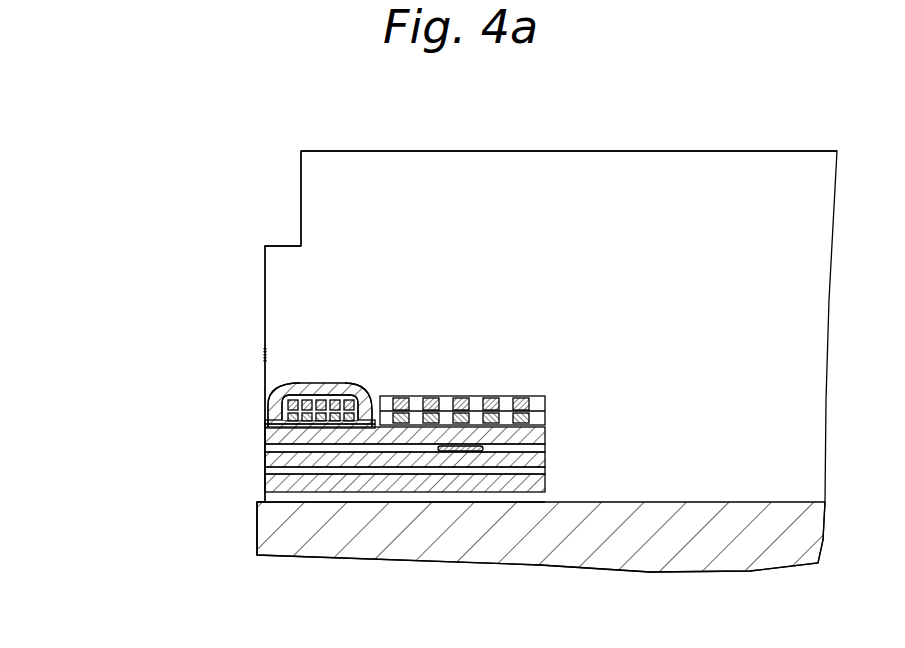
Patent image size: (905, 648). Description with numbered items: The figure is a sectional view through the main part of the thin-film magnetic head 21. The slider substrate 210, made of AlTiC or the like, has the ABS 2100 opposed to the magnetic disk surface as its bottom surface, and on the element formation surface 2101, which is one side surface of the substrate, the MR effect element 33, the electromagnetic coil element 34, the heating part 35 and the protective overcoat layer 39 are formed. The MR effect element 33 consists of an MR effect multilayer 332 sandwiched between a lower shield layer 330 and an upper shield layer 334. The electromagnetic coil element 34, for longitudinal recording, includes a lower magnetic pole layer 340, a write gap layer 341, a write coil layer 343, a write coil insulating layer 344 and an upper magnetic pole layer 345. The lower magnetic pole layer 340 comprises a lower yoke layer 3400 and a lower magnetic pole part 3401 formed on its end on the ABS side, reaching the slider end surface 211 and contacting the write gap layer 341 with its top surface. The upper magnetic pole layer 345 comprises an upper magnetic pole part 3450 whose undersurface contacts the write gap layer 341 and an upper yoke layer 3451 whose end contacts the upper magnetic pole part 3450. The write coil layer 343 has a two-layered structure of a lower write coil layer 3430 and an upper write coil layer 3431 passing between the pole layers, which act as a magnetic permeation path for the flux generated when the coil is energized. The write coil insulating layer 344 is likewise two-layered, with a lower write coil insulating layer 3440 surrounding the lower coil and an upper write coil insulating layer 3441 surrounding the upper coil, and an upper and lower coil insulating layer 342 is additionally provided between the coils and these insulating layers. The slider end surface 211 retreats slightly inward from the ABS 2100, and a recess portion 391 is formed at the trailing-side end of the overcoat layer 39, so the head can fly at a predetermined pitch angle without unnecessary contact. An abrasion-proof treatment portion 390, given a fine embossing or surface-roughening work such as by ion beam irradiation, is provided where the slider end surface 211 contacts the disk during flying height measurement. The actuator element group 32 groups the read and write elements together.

The thin-film magnetic head 21 is at (640, 142).
The overcoat layer 39 is at (365, 175).
The recess portion 391 is at (300, 196).
The slider end surface 211 is at (264, 258).
The slider substrate 210 is at (574, 565).
The ABS 2100 is at (257, 537).
The element formation surface 2101 is at (322, 498).
The piezoelectric actuator 32 is at (101, 265).
The electromagnetic coil element 34 is at (141, 265).
The MR effect element 33 is at (196, 476).
The lower shield layer 330 is at (265, 484).
The MR effect multilayer 332 is at (265, 471).
The upper shield layer 334 is at (265, 460).
The lower magnetic pole layer 340 is at (196, 432).
The lower yoke layer 3400 is at (265, 449).
The lower magnetic pole part 3401 is at (265, 436).
The heating part 35 is at (457, 452).
The write gap layer 341 is at (265, 427).
The upper and lower coil insulating layer 342 is at (265, 421).
The write coil layer 343 is at (196, 265).
The upper write coil layer 3431 is at (342, 382).
The lower write coil layer 3430 is at (330, 385).
The write coil insulating layer 344 is at (196, 307).
The upper write coil insulating layer 3441 is at (318, 392).
The lower write coil insulating layer 3440 is at (305, 395).
The upper magnetic pole layer 345 is at (196, 348).
The upper yoke layer 3451 is at (266, 392).
The upper magnetic pole part 3450 is at (268, 412).
The abrasion-proof treatment portion 390 is at (288, 349).